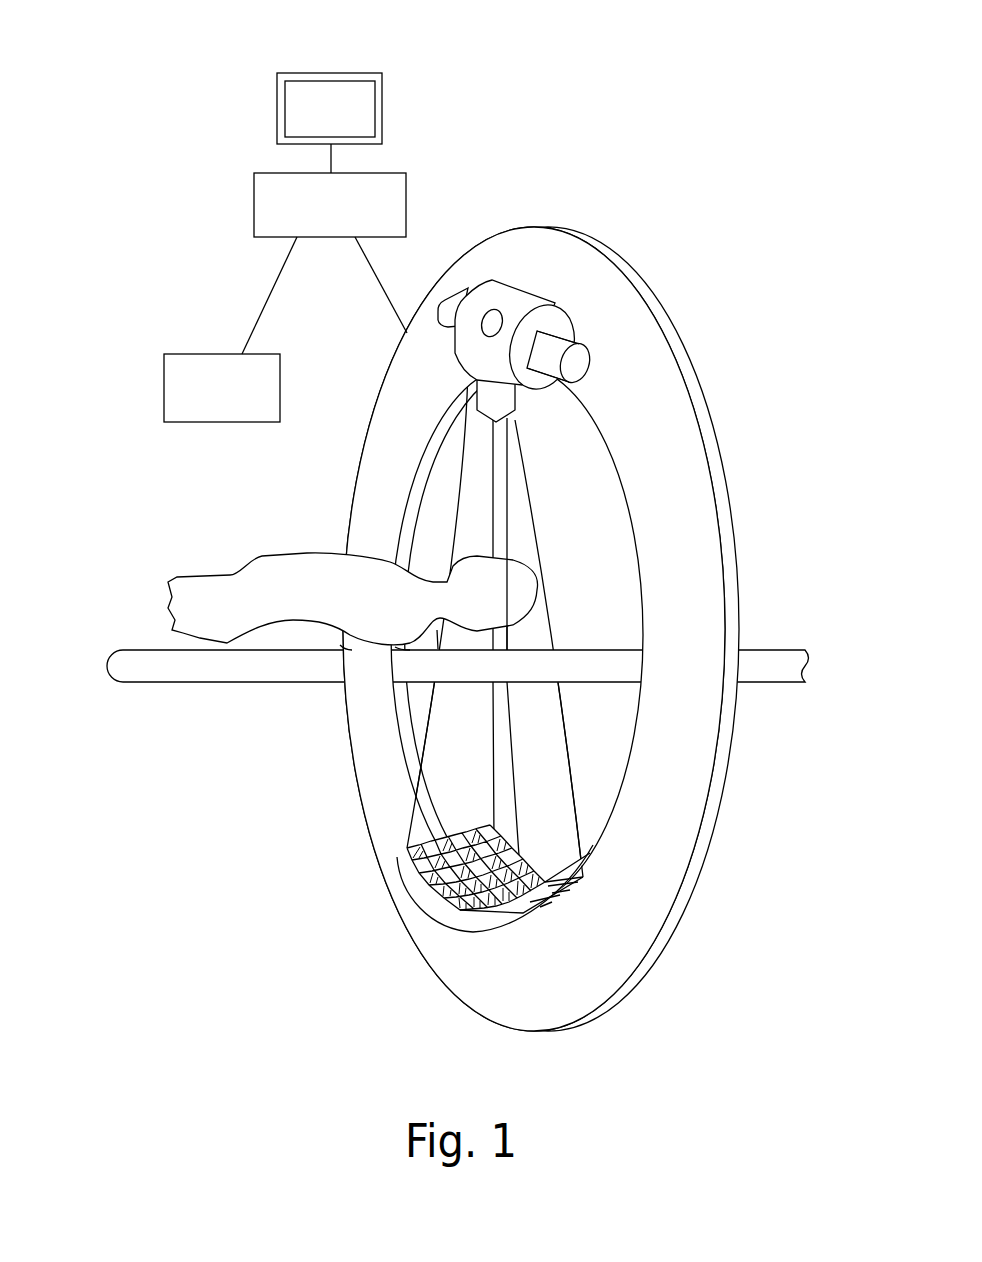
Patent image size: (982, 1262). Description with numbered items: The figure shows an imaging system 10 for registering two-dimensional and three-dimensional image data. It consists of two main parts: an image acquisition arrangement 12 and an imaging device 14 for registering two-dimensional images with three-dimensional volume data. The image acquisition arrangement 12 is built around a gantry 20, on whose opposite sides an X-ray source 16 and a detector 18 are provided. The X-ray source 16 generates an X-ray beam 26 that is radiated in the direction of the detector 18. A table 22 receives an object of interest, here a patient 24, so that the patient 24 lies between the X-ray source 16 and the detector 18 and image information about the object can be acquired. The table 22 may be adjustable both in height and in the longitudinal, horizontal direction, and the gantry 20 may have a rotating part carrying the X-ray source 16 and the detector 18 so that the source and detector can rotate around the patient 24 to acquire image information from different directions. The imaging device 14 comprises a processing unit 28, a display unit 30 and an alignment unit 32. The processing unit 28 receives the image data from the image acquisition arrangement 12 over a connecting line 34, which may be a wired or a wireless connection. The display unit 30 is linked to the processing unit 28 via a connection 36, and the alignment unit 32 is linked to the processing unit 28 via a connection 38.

The imaging system 10 is at (446, 549).
The image acquisition arrangement 12 is at (446, 629).
The imaging device 14 is at (284, 223).
The X-ray source 16 is at (527, 305).
The detector 18 is at (443, 910).
The gantry 20 is at (668, 878).
The table 22 is at (107, 667).
The patient 24 is at (210, 600).
The X-ray beam 26 is at (535, 500).
The processing unit 28 is at (406, 205).
The display unit 30 is at (382, 90).
The alignment unit 32 is at (177, 380).
The connecting line 34 is at (382, 282).
The connection 36 is at (330, 163).
The connection 38 is at (276, 276).